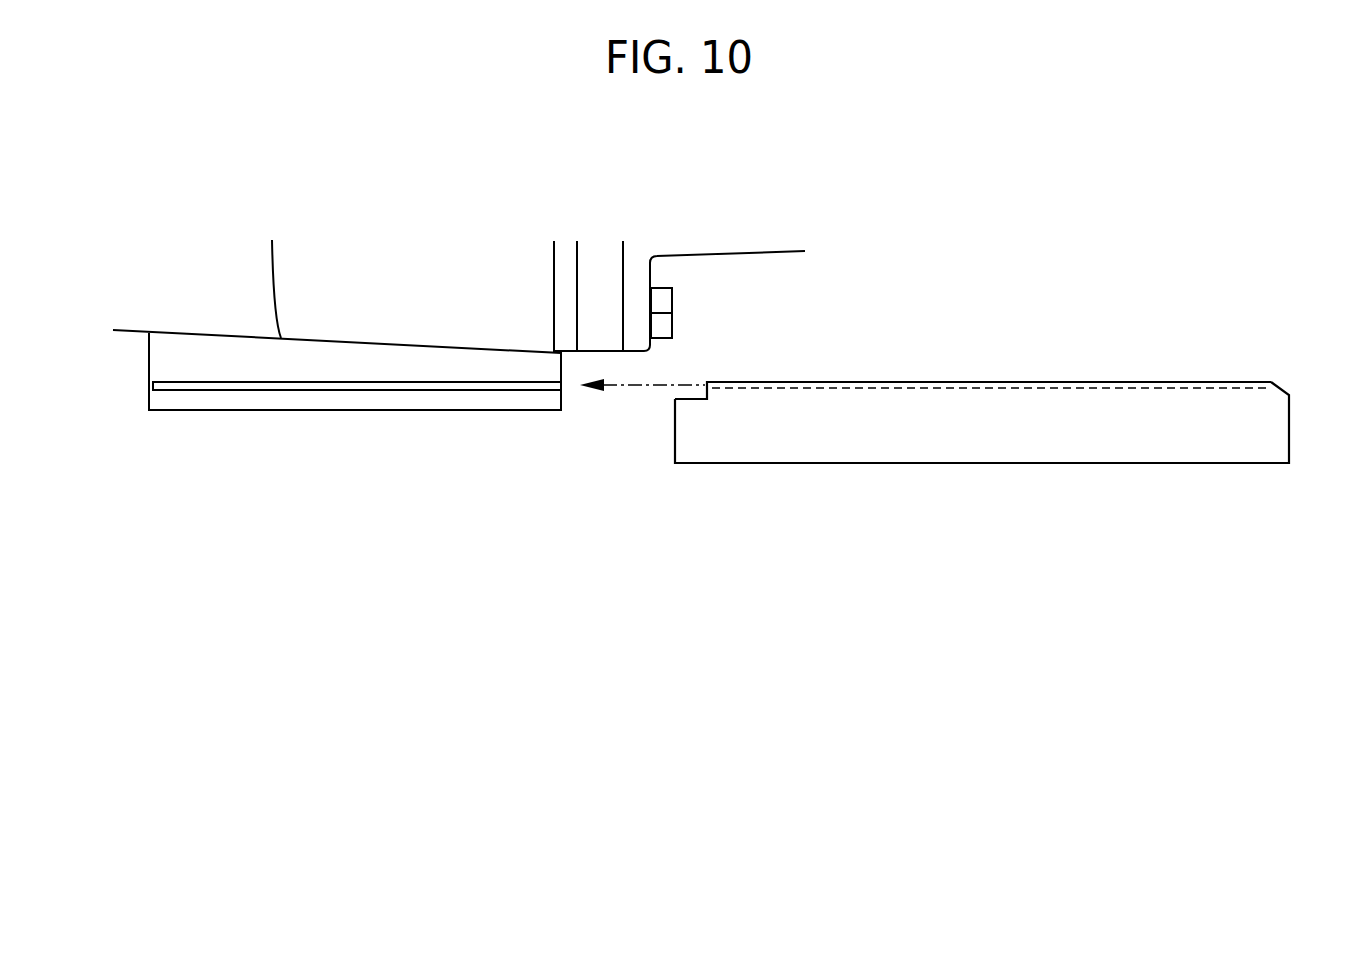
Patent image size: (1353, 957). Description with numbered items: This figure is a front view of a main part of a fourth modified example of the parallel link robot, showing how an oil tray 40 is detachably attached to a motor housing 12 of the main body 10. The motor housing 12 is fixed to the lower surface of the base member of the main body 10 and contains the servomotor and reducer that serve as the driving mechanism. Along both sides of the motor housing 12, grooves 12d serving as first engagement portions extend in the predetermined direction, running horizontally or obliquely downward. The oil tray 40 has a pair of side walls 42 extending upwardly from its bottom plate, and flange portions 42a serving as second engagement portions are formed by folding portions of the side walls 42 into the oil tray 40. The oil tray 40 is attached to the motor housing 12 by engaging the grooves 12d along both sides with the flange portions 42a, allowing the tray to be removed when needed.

The main body 10 is at (797, 232).
The motor housing 12 is at (127, 331).
The groove 12d is at (350, 385).
The oil tray 40 is at (1167, 463).
The side wall 42 is at (990, 438).
The flange portion 42a is at (983, 388).